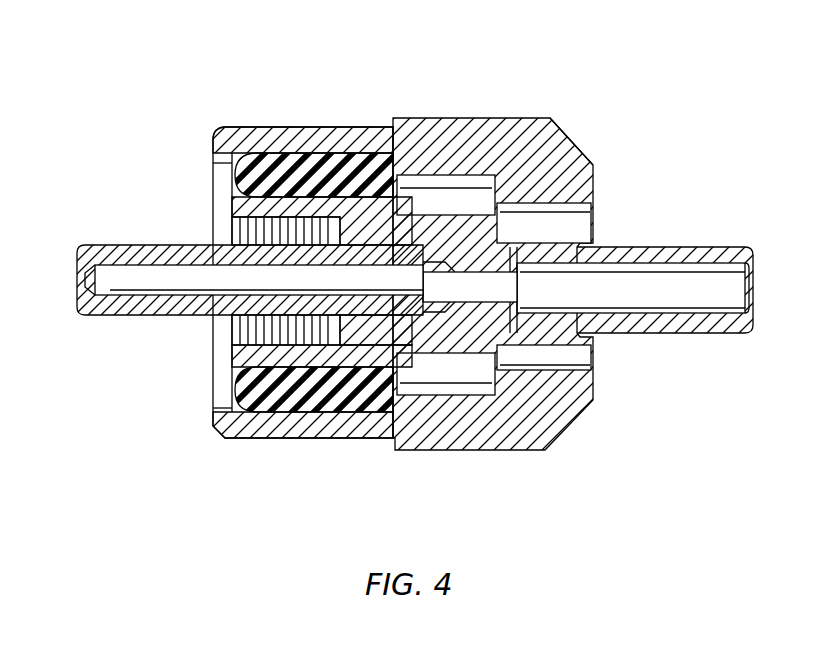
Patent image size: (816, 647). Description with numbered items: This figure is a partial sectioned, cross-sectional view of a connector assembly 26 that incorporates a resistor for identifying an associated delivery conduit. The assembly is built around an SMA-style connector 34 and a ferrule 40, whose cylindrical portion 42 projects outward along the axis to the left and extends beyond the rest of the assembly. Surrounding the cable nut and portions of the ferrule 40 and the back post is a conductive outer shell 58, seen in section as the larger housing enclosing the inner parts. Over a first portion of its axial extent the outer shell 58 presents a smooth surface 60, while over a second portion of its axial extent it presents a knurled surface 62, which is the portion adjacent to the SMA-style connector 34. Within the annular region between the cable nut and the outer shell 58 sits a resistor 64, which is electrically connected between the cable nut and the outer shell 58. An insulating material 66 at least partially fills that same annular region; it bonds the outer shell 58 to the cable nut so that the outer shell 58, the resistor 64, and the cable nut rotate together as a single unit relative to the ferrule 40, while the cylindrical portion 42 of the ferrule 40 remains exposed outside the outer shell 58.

The connector assembly 26 is at (623, 422).
The SMA-style connector 34 is at (664, 217).
The ferrule 40 is at (152, 333).
The cylindrical portion 42 is at (137, 247).
The conductive outer shell 58 is at (568, 134).
The smooth surface 60 is at (335, 127).
The knurled surface 62 is at (458, 118).
The resistor 64 is at (322, 178).
The insulating material 66 is at (308, 397).